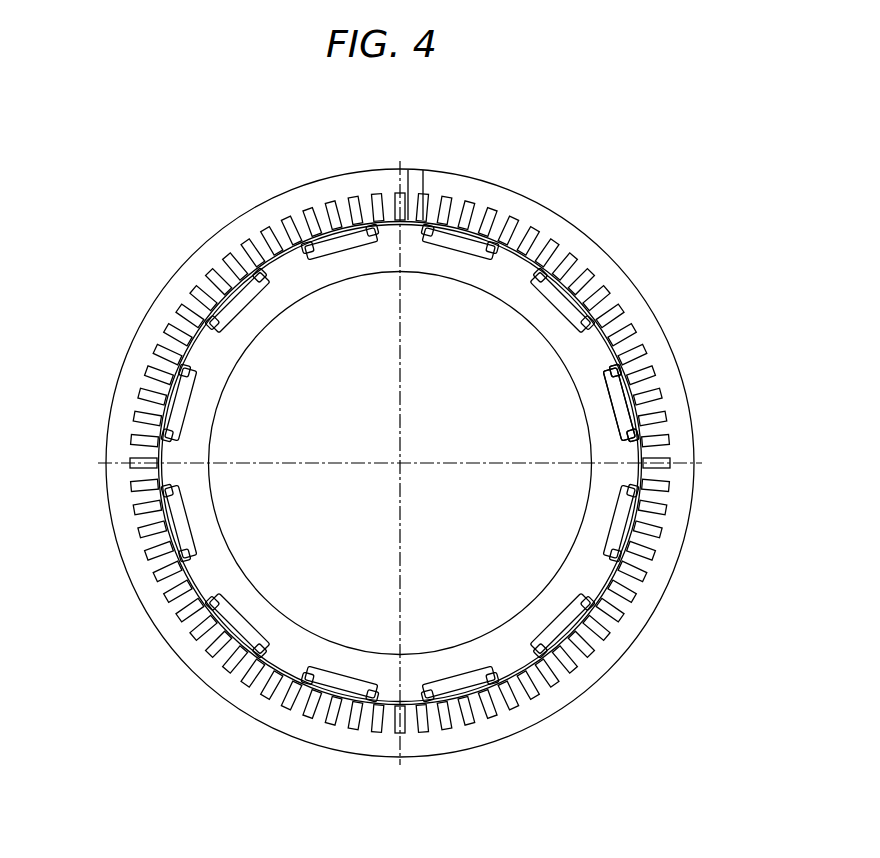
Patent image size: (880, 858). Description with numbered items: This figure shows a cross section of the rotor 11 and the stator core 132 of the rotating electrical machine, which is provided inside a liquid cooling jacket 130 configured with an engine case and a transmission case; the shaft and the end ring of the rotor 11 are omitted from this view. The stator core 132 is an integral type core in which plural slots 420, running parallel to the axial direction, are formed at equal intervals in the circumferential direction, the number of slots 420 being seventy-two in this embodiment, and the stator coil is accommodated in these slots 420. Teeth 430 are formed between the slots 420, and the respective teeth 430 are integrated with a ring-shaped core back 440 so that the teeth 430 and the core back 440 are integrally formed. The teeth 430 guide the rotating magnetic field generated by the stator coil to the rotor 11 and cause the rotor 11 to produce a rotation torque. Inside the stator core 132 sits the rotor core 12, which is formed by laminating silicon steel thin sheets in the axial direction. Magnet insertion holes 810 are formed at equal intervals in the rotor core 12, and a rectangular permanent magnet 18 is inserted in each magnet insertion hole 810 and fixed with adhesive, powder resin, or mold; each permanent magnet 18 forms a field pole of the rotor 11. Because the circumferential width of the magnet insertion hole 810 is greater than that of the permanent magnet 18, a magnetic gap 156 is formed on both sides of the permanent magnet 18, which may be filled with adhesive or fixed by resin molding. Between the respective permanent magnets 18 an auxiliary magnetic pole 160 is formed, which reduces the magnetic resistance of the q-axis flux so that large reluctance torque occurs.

The rotor 11 is at (272, 327).
The rotor core 12 is at (357, 265).
The permanent magnet 18 is at (578, 272).
The liquid cooling jacket 130 is at (203, 247).
The stator core 132 is at (345, 188).
The magnetic gap 156 is at (613, 372).
The auxiliary magnetic pole 160 is at (600, 350).
The slot 420 is at (427, 172).
The tooth 430 is at (405, 167).
The core back 440 is at (162, 315).
The magnet insertion hole 810 is at (637, 427).